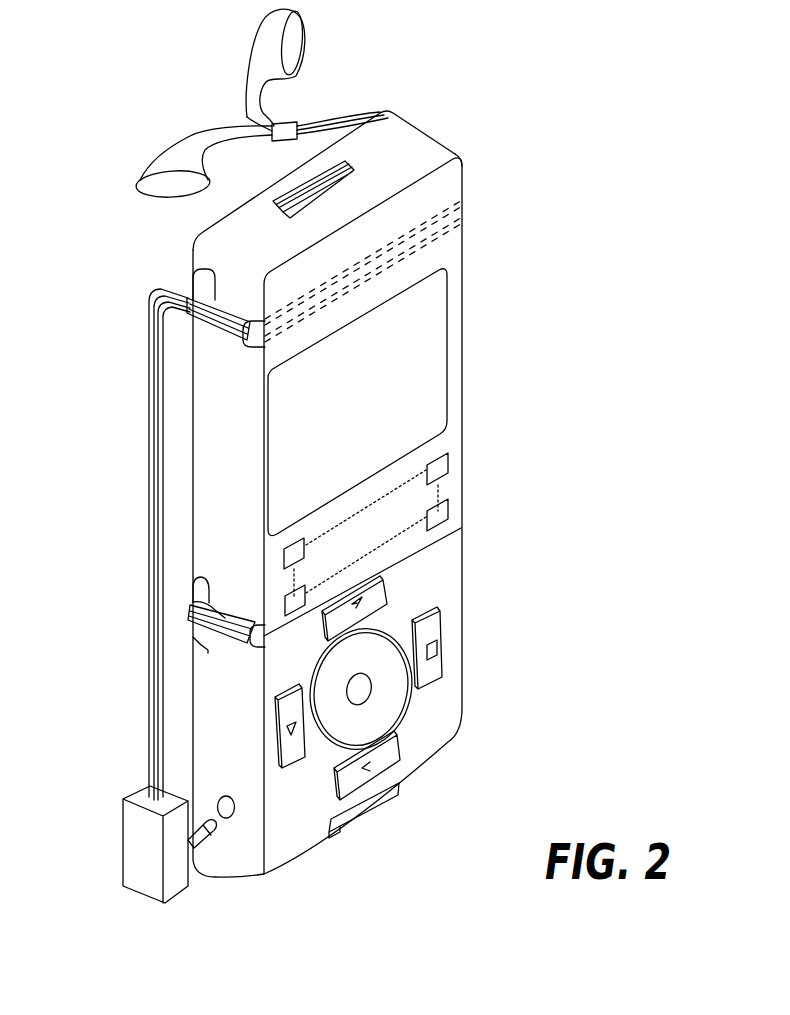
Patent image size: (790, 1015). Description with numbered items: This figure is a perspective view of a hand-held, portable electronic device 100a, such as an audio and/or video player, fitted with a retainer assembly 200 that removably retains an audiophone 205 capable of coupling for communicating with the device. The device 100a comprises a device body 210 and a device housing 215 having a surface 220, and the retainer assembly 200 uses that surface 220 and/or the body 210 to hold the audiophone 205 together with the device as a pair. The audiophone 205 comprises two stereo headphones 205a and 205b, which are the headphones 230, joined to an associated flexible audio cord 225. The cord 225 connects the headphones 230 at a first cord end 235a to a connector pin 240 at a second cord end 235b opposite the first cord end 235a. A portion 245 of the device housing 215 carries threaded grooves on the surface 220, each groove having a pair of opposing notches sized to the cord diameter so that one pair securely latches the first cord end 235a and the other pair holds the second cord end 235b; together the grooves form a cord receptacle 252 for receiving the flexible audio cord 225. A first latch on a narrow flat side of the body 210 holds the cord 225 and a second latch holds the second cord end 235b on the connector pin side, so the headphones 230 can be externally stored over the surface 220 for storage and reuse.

The hand-held, portable electronic device 100a is at (585, 191).
The retainer assembly 200 is at (180, 471).
The audiophone 205 is at (140, 249).
The stereo headphone 205a is at (162, 148).
The stereo headphone 205b is at (257, 40).
The device body 210 is at (448, 576).
The device housing 215 is at (412, 115).
The surface 220 is at (449, 192).
The flexible audio cord 225 is at (147, 440).
The headphone 230 is at (300, 124).
The first cord end 235a is at (150, 790).
The second cord end 235b is at (308, 120).
The connector pin 240 is at (194, 845).
The portion of the device housing 245 is at (203, 379).
The cord receptacle 252 is at (222, 588).